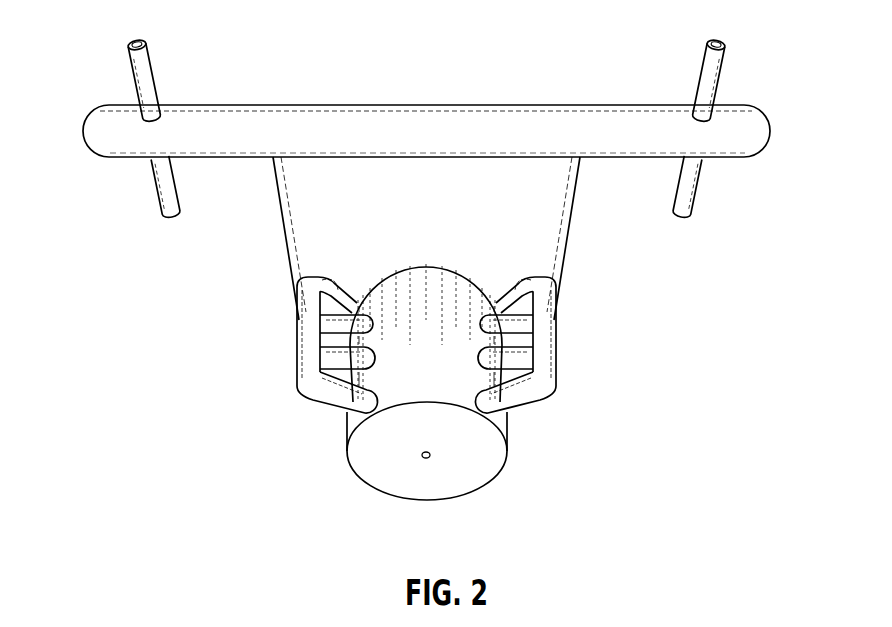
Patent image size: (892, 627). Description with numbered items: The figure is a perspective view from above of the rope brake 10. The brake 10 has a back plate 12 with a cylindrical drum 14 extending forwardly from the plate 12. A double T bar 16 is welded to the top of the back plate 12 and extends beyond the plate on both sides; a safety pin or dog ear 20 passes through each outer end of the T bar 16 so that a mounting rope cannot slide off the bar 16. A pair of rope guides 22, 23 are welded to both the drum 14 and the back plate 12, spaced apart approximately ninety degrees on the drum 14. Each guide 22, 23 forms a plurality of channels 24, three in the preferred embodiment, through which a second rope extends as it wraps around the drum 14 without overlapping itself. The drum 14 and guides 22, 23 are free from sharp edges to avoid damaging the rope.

The rope brake 10 is at (714, 493).
The back plate 12 is at (298, 207).
The cylindrical drum 14 is at (348, 416).
The double T bar 16 is at (437, 128).
The safety pin 20 is at (173, 221).
The right rope guide 22 is at (299, 368).
The left rope guide 23 is at (554, 368).
The channels 24 is at (488, 303).